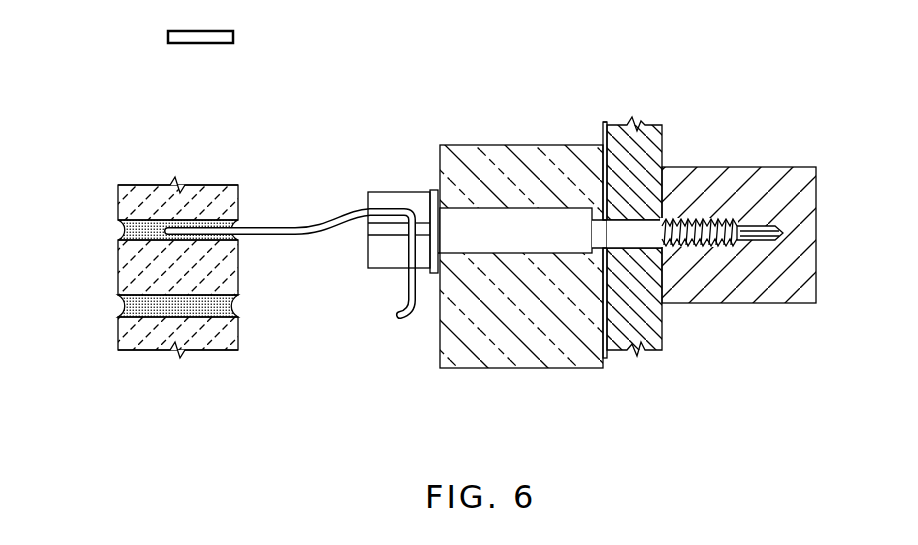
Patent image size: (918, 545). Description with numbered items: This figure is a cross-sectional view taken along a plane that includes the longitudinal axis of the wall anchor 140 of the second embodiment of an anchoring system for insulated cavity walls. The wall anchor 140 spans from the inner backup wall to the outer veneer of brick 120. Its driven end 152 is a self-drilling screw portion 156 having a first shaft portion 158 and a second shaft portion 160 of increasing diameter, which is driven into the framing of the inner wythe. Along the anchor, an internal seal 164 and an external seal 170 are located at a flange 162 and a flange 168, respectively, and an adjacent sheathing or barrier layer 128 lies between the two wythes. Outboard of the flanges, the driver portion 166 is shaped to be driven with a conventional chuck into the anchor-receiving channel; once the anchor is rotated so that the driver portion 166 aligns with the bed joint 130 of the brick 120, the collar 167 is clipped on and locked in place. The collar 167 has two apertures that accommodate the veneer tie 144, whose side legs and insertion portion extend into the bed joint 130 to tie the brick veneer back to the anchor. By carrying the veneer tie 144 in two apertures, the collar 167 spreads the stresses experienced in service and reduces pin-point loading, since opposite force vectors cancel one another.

The brick 120 is at (118, 332).
The bed joint 130 is at (125, 232).
The veneer tie 144 is at (268, 224).
The driver portion 166 is at (397, 192).
The collar 167 is at (370, 246).
The flange 168 is at (437, 189).
The external seal 170 is at (439, 262).
The second shaft portion 160 is at (530, 242).
The internal seal 164 is at (598, 255).
The wall anchor 140 is at (518, 198).
The flange 162 is at (621, 128).
The sheathing 128 is at (603, 137).
The first shaft portion 158 is at (652, 352).
The driven end 152 is at (780, 218).
The self-drilling screw portion 156 is at (762, 250).